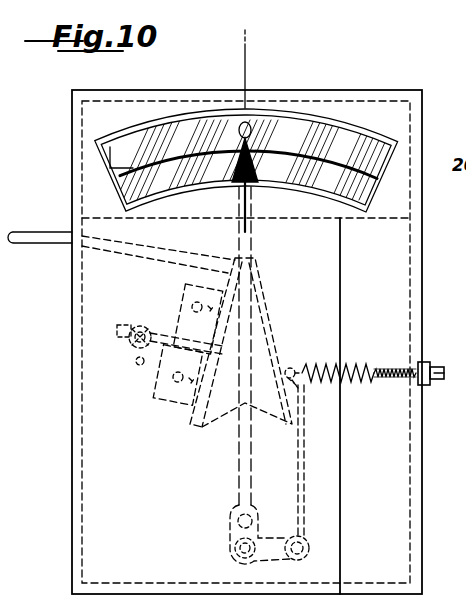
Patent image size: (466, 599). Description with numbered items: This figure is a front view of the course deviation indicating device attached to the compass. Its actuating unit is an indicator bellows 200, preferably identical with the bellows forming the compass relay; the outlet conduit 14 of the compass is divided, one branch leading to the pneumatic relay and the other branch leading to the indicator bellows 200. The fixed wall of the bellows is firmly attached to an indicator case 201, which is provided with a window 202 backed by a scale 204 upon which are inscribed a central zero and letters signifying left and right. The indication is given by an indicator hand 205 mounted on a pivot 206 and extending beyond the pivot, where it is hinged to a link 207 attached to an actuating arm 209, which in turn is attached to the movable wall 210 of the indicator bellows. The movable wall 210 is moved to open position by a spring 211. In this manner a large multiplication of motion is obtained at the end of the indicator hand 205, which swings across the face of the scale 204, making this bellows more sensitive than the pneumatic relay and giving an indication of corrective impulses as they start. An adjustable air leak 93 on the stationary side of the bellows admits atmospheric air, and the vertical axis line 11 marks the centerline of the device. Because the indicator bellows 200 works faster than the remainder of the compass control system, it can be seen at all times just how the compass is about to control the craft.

The axis line 11 is at (250, 65).
The outlet conduit 14 is at (42, 238).
The air leak 93 is at (137, 325).
The indicator bellows 200 is at (220, 398).
The indicator case 201 is at (145, 551).
The window 202 is at (341, 143).
The scale 204 is at (132, 163).
The indicator hand 205 is at (236, 180).
The pivot 206 is at (248, 518).
The link 207 is at (262, 549).
The actuating arm 209 is at (300, 488).
The movable wall 210 is at (268, 327).
The spring 211 is at (350, 363).